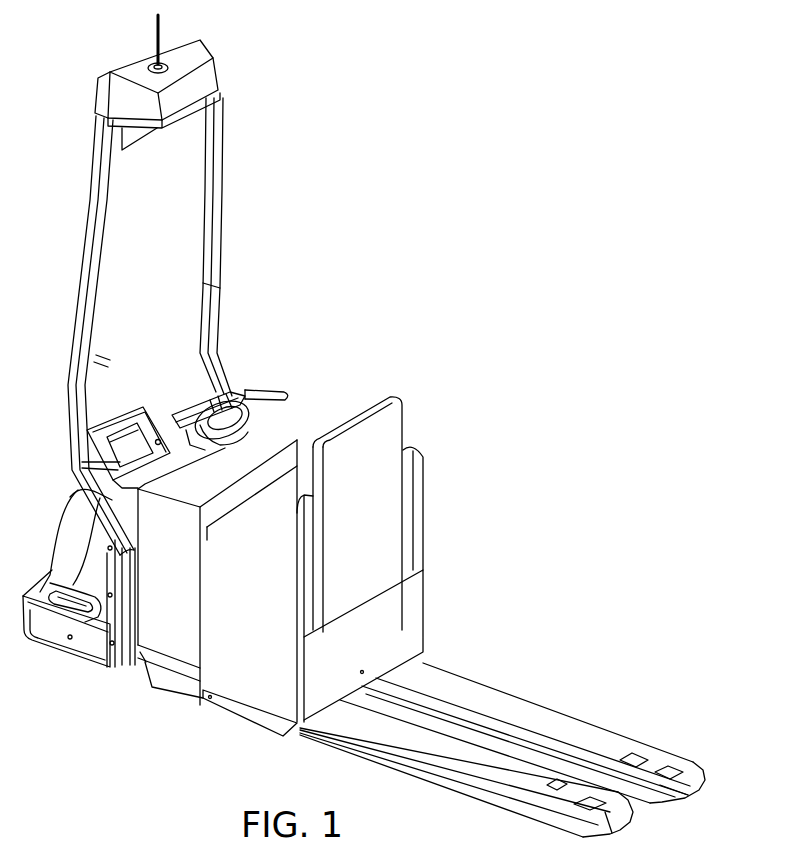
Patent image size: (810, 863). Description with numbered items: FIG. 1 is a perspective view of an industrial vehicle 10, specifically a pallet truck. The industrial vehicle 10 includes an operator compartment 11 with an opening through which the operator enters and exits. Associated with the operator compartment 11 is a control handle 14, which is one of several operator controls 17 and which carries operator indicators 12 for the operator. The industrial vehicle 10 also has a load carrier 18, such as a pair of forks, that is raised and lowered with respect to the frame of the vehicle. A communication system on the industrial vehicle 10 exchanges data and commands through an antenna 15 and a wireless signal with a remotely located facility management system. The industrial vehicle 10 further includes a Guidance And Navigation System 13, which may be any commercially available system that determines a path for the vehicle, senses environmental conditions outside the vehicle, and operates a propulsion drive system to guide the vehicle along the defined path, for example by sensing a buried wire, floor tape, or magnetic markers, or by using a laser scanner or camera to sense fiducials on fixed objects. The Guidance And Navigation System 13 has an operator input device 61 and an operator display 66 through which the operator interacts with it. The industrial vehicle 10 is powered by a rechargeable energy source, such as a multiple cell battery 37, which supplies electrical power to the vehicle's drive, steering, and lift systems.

The industrial vehicle 10 is at (170, 721).
The operator compartment 11 is at (262, 583).
The operator indicators 12 is at (230, 452).
The Guidance And Navigation System 13 is at (97, 92).
The control handle 14 is at (248, 390).
The antenna 15 is at (157, 37).
The operator controls 17 is at (245, 374).
The load carrier 18 is at (460, 692).
The multiple cell battery 37 is at (160, 638).
The operator input device 61 is at (82, 462).
The operator display 66 is at (118, 438).